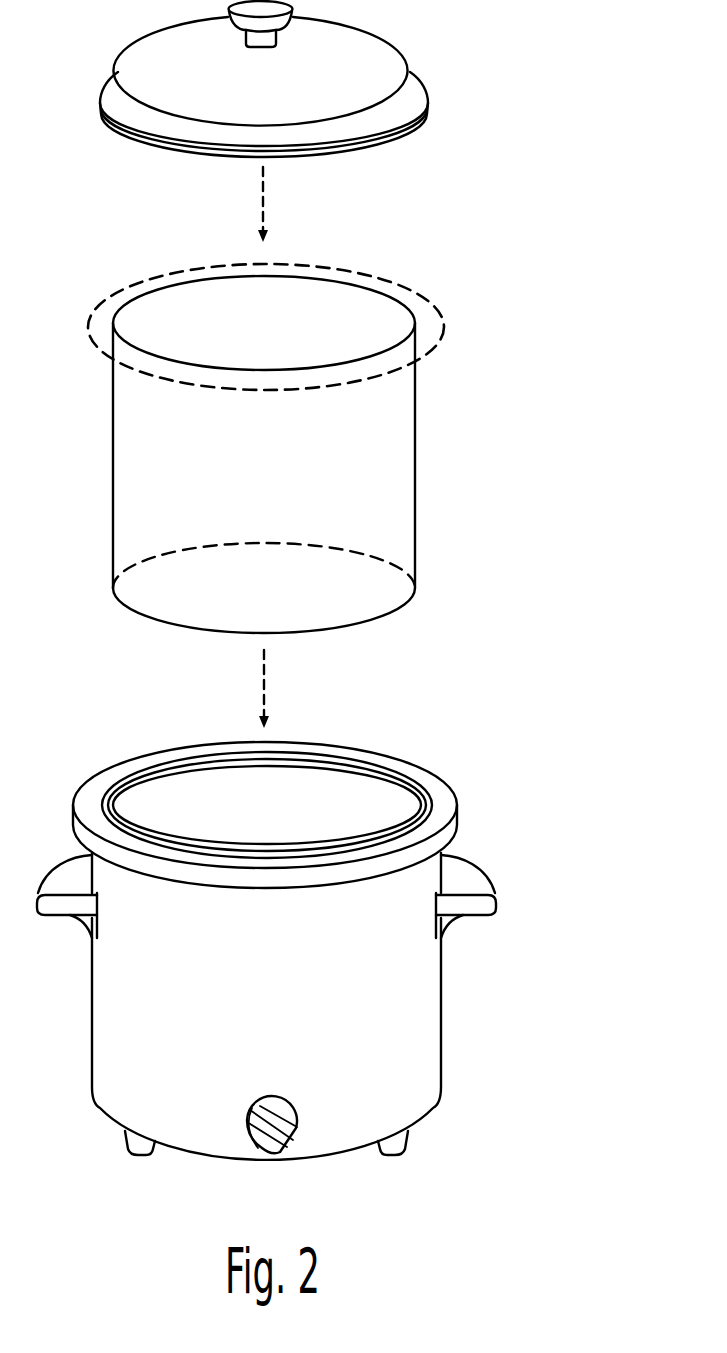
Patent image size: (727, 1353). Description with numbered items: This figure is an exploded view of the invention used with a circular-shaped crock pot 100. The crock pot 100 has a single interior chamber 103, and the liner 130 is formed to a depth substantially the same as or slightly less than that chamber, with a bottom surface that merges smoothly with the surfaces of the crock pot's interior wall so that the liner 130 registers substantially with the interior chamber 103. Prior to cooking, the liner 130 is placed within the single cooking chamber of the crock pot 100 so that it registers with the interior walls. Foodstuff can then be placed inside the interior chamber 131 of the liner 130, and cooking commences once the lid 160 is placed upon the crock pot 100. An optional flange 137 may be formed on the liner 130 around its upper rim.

The crock pot 100 is at (312, 929).
The interior chamber 103 is at (364, 800).
The liner 130 is at (333, 454).
The interior chamber of liner 131 is at (279, 334).
The flange 137 is at (438, 308).
The lid 160 is at (453, 83).